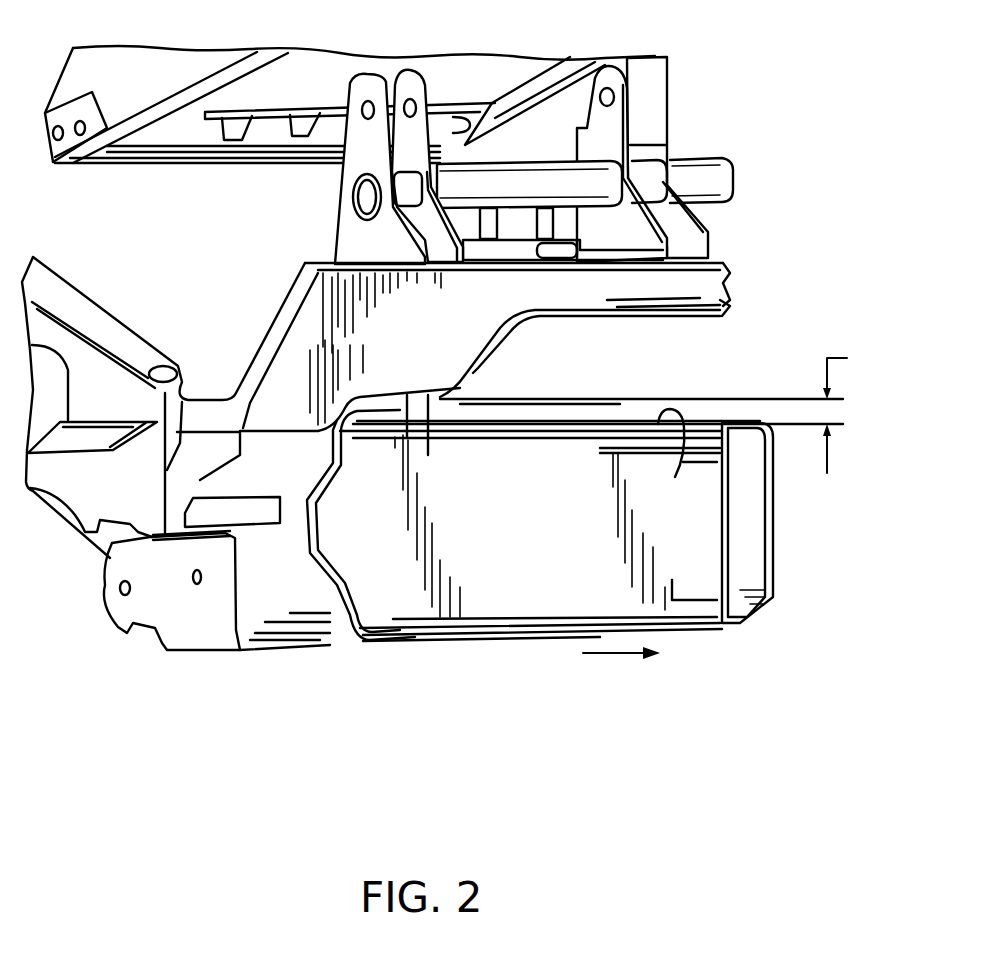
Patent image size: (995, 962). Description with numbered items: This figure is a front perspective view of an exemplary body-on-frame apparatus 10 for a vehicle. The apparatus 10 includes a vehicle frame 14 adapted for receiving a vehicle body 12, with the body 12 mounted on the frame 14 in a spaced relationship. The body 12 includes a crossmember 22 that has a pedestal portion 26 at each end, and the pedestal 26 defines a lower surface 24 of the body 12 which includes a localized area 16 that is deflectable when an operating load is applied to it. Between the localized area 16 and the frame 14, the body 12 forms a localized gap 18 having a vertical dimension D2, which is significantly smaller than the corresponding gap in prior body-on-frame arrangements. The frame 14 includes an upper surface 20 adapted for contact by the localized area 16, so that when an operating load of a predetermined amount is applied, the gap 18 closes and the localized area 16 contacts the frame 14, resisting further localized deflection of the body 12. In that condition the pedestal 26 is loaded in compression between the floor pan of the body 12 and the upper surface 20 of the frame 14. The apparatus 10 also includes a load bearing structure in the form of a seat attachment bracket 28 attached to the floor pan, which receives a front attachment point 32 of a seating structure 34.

The body-on-frame apparatus 10 is at (449, 382).
The vehicle body 12 is at (308, 302).
The vehicle frame 14 is at (537, 600).
The localized area 16 is at (428, 445).
The localized gap 18 is at (470, 412).
The upper surface 20 is at (676, 460).
The crossmember 22 is at (700, 285).
The lower surface 24 is at (408, 463).
The pedestal portion 26 is at (390, 315).
The seat attachment bracket 28 is at (686, 231).
The front attachment point 32 is at (690, 107).
The seating structure 34 is at (290, 153).
The vertical dimension D2 is at (852, 408).